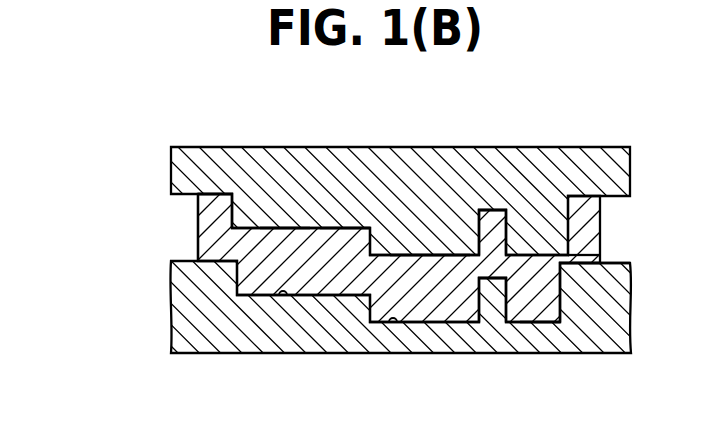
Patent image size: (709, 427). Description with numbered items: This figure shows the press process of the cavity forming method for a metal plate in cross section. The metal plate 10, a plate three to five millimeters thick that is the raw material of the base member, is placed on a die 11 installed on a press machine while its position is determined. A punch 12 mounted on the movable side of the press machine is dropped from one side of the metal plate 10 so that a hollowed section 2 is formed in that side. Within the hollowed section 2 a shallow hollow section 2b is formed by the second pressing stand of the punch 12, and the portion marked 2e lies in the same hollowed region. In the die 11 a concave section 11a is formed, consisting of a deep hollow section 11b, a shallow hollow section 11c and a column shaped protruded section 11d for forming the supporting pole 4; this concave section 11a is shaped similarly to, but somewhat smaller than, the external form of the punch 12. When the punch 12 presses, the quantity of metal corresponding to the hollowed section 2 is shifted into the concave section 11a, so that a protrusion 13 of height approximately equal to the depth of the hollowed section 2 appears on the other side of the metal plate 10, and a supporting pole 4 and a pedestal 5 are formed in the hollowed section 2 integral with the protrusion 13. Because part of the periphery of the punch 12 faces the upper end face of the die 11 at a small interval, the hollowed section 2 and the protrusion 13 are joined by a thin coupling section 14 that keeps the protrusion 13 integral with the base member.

The punch 12 is at (180, 175).
The metal plate 10 is at (200, 229).
The die 11 is at (183, 290).
The hollowed section 2 is at (566, 240).
The shallow hollow section 2b is at (285, 228).
The pedestal 5 is at (340, 240).
The middle portion of intermediate layer 2e is at (428, 258).
The supporting pole 4 is at (490, 215).
The coupling section 14 is at (575, 254).
The protrusion 13 is at (558, 286).
The shallow hollow section 11c is at (280, 297).
The deep hollow section 11b is at (388, 322).
The column shaped protruded section 11d is at (492, 312).
The concave section 11a is at (556, 297).